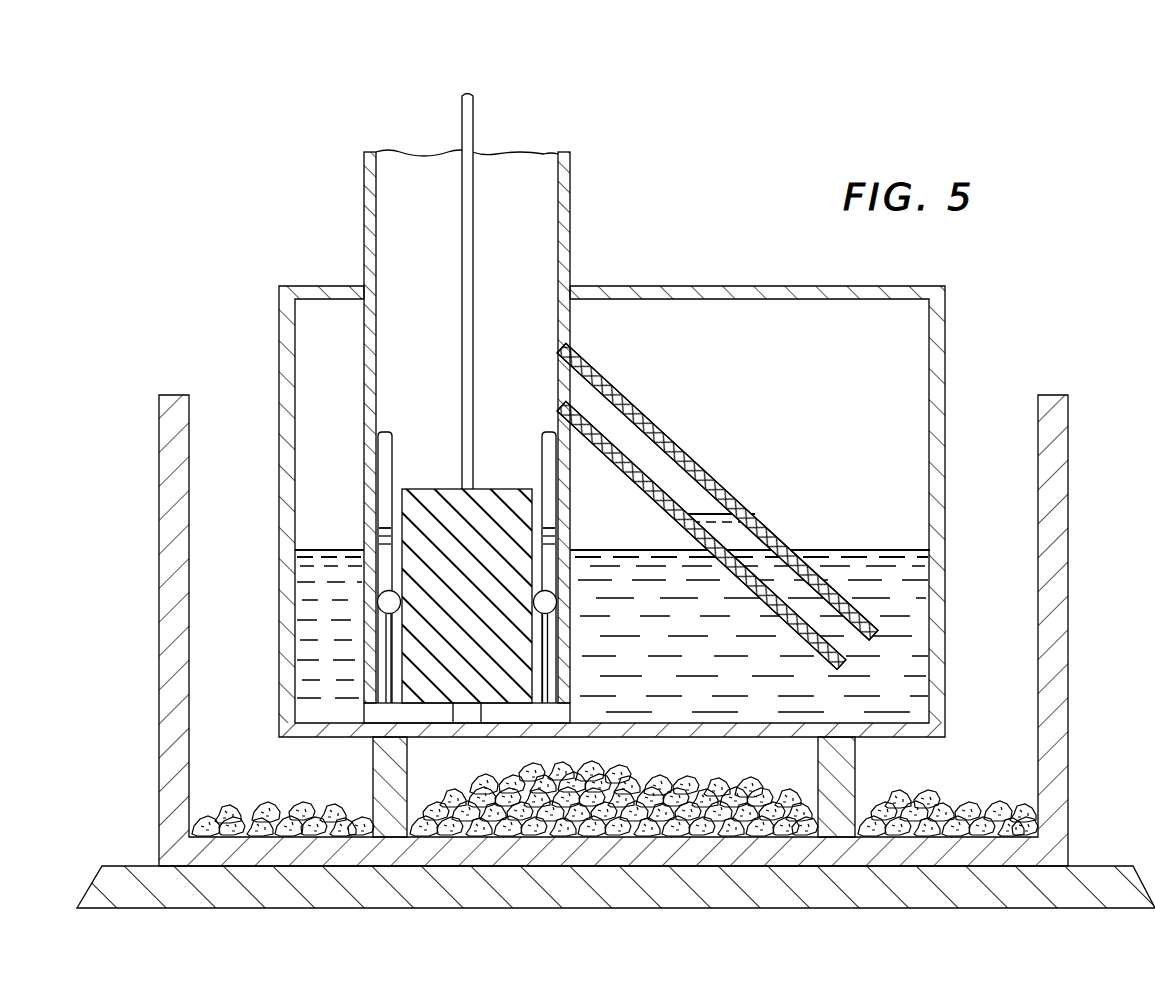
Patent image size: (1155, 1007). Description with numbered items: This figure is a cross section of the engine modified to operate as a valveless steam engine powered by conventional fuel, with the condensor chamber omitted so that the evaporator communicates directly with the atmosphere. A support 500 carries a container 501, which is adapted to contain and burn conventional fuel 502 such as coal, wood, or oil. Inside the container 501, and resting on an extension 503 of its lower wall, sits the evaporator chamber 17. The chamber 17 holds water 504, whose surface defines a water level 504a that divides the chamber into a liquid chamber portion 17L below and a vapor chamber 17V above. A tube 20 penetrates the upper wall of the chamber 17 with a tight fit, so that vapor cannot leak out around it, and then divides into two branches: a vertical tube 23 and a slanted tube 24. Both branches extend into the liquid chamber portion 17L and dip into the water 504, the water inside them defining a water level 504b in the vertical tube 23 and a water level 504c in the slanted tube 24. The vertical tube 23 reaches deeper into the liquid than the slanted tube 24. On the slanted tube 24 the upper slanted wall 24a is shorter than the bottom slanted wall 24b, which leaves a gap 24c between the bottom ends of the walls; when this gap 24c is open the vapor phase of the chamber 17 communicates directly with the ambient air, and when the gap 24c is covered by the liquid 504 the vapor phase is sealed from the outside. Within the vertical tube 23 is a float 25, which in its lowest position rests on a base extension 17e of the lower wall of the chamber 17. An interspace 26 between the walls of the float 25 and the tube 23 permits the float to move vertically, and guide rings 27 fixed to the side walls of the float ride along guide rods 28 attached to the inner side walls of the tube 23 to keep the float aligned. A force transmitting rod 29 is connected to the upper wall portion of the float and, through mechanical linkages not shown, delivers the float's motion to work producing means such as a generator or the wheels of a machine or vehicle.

The evaporator chamber 17 is at (926, 341).
The vapor chamber 17V is at (840, 386).
The liquid chamber portion 17L is at (776, 691).
The base extension of lower wall of chamber 17e is at (475, 716).
The tube 20 is at (549, 248).
The vertical tube 23 is at (521, 421).
The slanted tube 24 is at (731, 517).
The upper slanted wall 24a is at (683, 446).
The bottom slanted wall 24b is at (637, 485).
The gap 24c is at (852, 658).
The float 25 is at (480, 604).
The interspace 26 is at (379, 701).
The guide rings 27 is at (378, 606).
The guide rods 28 is at (393, 433).
The force transmitting rod 29 is at (474, 206).
The support 500 is at (143, 866).
The container 501 is at (1025, 672).
The fuel 502 is at (545, 775).
The extension of lower wall of container 503 is at (856, 762).
The water 504 is at (912, 573).
The water level 504a is at (676, 551).
The water level in tube 23 504b is at (425, 591).
The water level in tube 24 504c is at (713, 513).